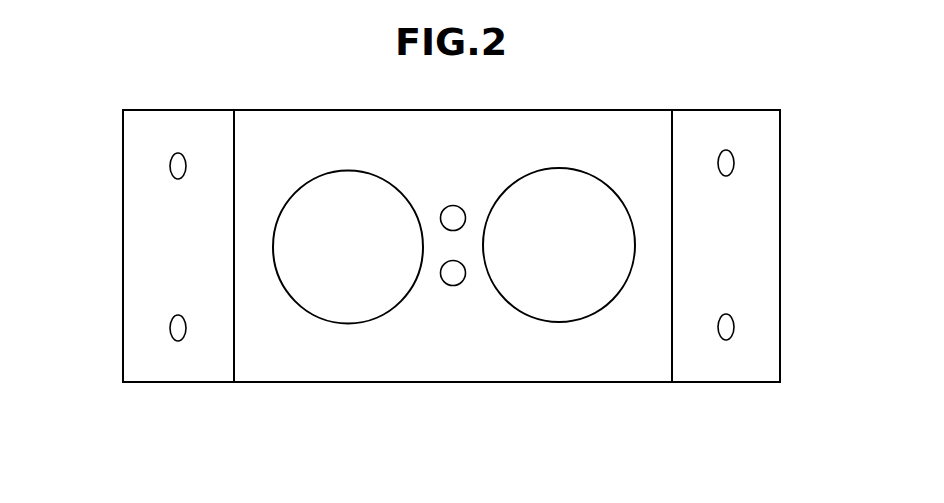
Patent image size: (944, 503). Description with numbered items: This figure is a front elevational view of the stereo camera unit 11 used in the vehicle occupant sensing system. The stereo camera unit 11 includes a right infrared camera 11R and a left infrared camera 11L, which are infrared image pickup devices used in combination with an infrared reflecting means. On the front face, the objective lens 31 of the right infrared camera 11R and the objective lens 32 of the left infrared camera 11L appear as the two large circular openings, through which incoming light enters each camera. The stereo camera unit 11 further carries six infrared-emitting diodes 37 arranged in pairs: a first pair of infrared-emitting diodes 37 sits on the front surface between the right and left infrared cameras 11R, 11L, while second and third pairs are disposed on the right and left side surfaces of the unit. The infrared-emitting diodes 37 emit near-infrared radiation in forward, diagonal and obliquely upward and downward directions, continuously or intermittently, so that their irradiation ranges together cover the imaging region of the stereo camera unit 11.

The stereo camera unit 11 is at (593, 107).
The left infrared camera 11L is at (317, 177).
The right infrared camera 11R is at (599, 176).
The objective lens 31 is at (577, 300).
The objective lens 32 is at (329, 302).
The infrared-emitting diodes 37 is at (168, 165).